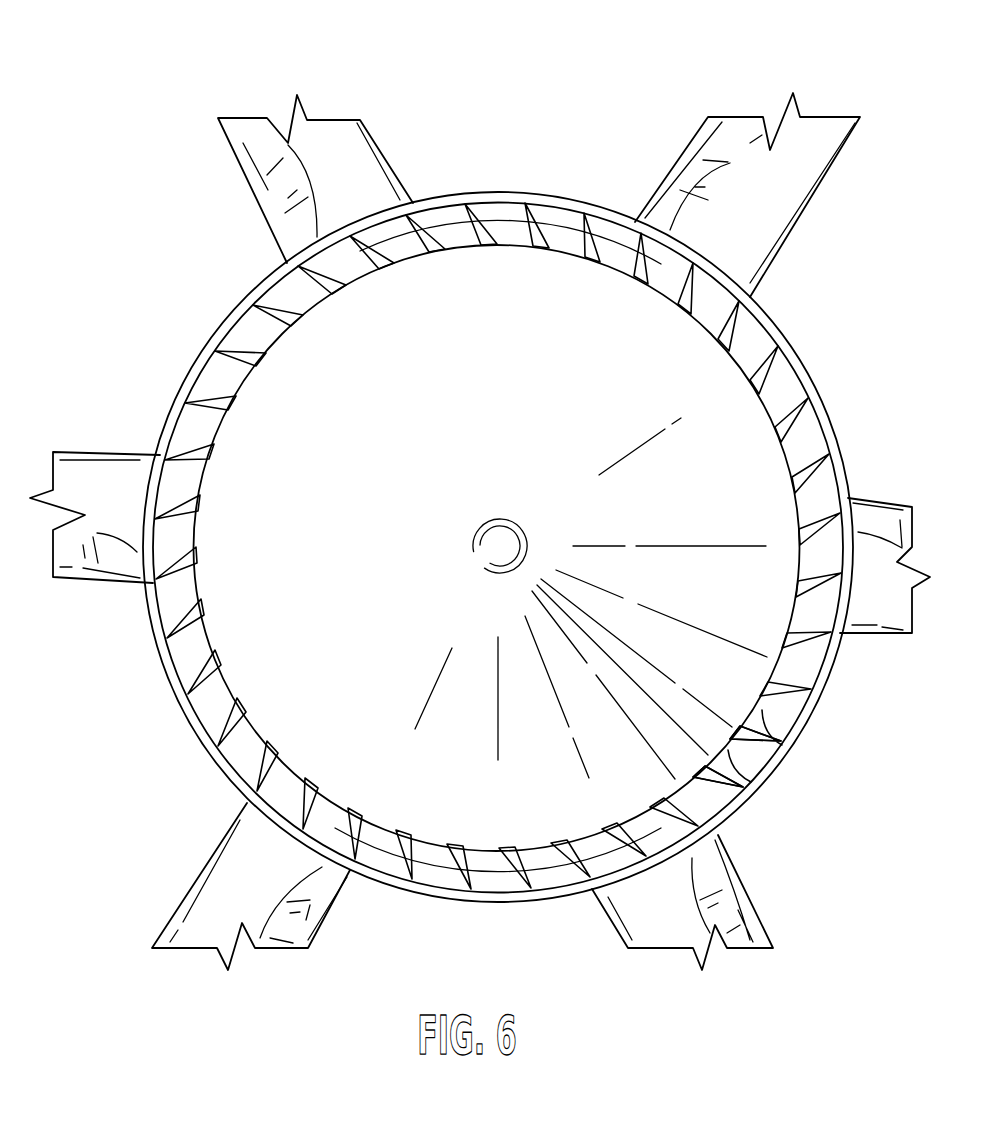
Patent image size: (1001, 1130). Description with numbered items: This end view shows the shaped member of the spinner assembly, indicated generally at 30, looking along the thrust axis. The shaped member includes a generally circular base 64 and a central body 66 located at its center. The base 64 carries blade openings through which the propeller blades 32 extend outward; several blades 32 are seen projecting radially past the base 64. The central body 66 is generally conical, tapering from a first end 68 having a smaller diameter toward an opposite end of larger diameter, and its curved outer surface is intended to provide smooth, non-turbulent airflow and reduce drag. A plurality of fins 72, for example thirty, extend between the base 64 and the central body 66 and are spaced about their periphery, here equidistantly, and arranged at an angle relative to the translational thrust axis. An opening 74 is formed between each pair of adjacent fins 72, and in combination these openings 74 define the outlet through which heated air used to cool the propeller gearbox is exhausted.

The fan wheel assembly 30 is at (83, 126).
The propeller blades 32 is at (692, 176).
The base 64 is at (807, 365).
The central body 66 is at (282, 650).
The first end 68 is at (501, 546).
The fins 72 is at (195, 390).
The opening 74 is at (735, 748).